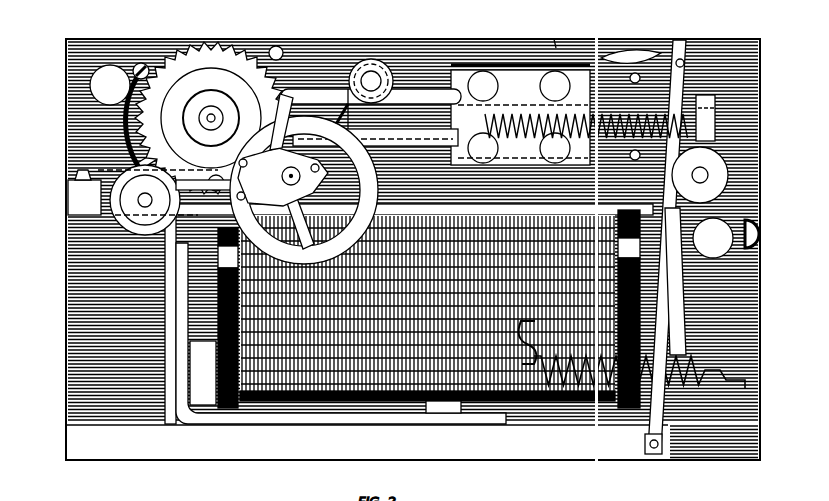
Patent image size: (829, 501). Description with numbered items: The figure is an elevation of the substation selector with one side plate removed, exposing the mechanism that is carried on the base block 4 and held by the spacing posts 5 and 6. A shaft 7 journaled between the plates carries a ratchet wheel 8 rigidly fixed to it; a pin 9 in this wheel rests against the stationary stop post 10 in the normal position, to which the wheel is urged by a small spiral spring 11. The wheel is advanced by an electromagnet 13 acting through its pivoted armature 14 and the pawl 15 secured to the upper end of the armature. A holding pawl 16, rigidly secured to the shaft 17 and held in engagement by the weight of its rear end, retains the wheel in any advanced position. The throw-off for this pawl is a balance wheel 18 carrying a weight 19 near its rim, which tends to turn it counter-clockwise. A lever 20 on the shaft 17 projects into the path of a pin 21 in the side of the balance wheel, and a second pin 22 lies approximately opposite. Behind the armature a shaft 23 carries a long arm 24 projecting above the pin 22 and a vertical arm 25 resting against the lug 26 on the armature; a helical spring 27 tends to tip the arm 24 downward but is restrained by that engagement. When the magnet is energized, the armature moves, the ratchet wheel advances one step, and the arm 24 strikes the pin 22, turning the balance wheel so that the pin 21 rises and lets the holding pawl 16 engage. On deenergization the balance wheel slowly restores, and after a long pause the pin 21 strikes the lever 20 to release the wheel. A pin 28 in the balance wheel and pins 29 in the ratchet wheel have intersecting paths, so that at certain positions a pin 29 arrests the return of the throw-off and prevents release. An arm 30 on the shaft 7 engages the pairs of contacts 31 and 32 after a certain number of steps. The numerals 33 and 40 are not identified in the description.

The base block 4 is at (167, 447).
The spacing post 5 is at (101, 58).
The spacing post 6 is at (710, 228).
The shaft 7 is at (200, 109).
The ratchet wheel 8 is at (213, 33).
The pin 9 is at (207, 167).
The stop post 10 is at (96, 158).
The spiral spring 11 is at (177, 42).
The electromagnet 13 is at (285, 406).
The armature 14 is at (662, 275).
The pawl 15 is at (627, 110).
The holding pawl 16 is at (187, 208).
The shaft 17 is at (130, 190).
The balance wheel 18 is at (356, 205).
The weight 19 is at (216, 196).
The lever 20 is at (140, 380).
The pin 21 is at (304, 190).
The second pin 22 is at (312, 162).
The shaft 23 is at (700, 167).
The long arm 24 is at (700, 175).
The vertical arm 25 is at (708, 100).
The lug 26 is at (683, 87).
The helical spring 27 is at (672, 45).
The pin 28 is at (278, 92).
The pins 29 is at (286, 170).
The arm 30 is at (132, 157).
The electrical contacts 31 is at (418, 97).
The electrical contacts 32 is at (377, 96).
The housing 33 is at (495, 86).
The pin 40 is at (559, 37).